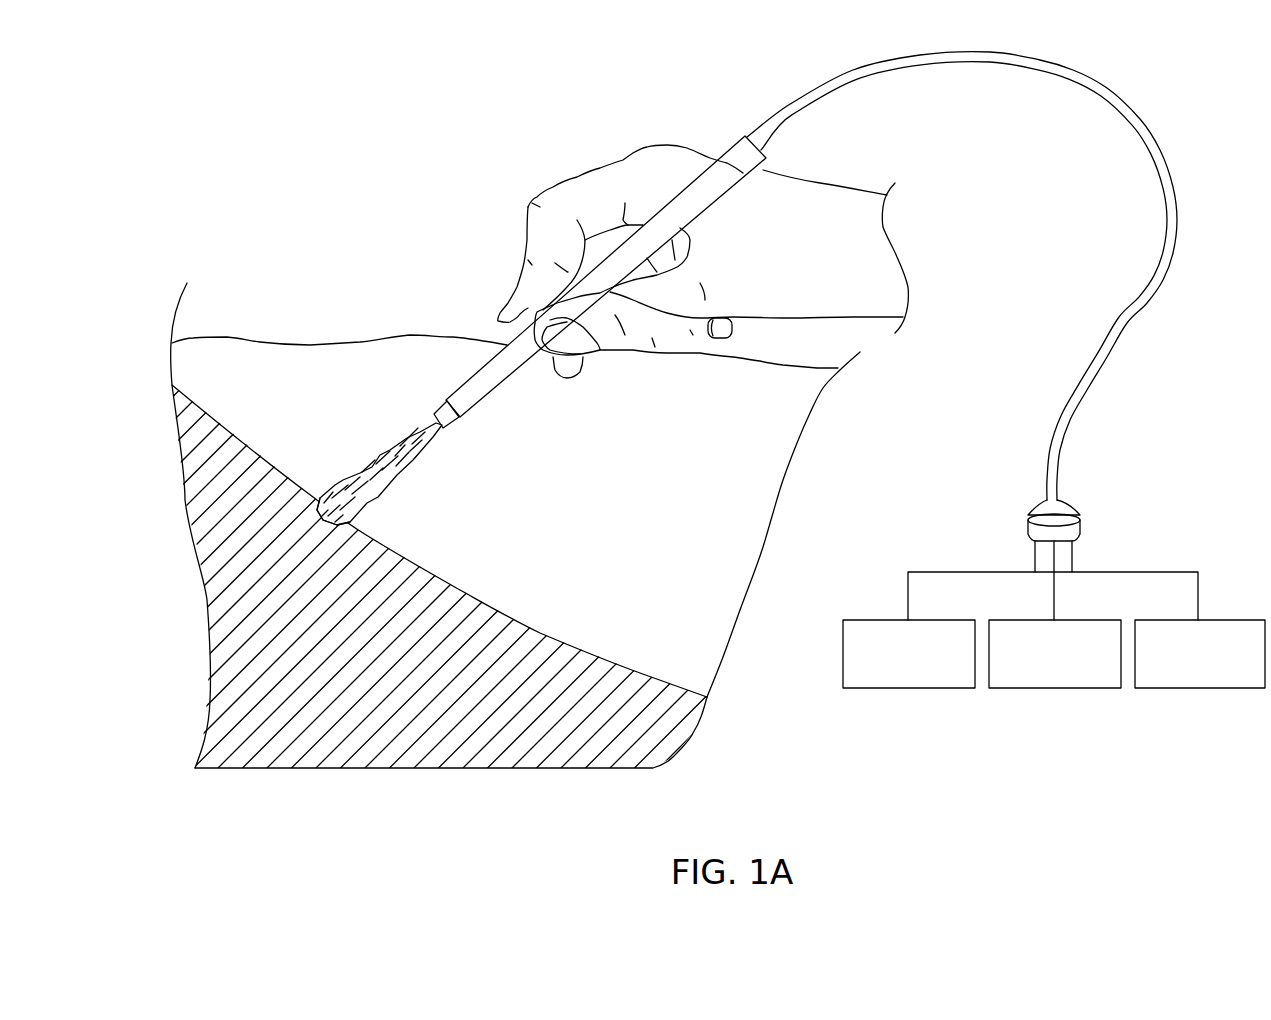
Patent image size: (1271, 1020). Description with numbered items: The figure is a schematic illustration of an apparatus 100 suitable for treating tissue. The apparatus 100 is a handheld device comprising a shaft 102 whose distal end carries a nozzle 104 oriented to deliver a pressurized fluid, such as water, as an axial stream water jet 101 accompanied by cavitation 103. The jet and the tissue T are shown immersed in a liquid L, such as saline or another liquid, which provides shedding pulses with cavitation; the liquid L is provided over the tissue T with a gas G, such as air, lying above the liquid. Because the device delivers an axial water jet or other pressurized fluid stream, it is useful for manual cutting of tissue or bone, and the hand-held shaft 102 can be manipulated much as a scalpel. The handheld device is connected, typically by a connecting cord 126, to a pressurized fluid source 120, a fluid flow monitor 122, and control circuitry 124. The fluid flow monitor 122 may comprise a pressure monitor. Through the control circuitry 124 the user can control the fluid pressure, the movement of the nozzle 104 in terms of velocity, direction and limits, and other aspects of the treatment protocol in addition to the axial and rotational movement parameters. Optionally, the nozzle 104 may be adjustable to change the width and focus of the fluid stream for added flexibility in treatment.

The apparatus 100 is at (599, 69).
The axial stream water jet 101 is at (402, 462).
The shaft 102 is at (515, 366).
The cavitation 103 is at (363, 498).
The nozzle 104 is at (434, 420).
The pressurized fluid source 120 is at (918, 690).
The fluid flow monitor 122 is at (1060, 690).
The control circuitry 124 is at (1205, 690).
The connecting cord 126 is at (1111, 362).
The gas G is at (366, 212).
The liquid L is at (233, 373).
The tissue T is at (268, 462).